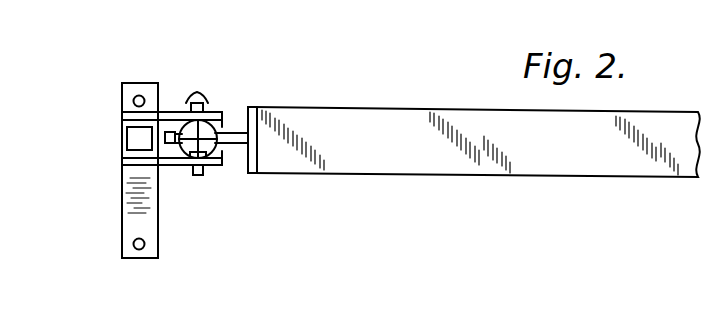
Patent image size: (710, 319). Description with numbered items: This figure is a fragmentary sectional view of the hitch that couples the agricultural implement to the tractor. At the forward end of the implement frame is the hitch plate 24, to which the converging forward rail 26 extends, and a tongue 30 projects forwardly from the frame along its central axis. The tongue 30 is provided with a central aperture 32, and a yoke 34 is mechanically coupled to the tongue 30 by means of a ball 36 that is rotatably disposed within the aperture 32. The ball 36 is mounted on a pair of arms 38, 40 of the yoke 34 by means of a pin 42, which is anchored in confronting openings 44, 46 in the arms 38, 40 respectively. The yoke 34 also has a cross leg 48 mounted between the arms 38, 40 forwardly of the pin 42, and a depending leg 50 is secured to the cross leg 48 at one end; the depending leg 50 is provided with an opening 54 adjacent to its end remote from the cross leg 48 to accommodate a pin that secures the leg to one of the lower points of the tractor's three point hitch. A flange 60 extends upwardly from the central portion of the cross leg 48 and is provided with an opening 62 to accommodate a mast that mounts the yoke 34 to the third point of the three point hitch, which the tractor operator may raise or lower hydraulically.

The hitch plate 24 is at (250, 107).
The forward rail 26 is at (492, 176).
The tongue 30 is at (233, 131).
The central aperture 32 is at (180, 166).
The yoke 34 is at (116, 125).
The ball 36 is at (197, 178).
The arm 38 is at (174, 112).
The arm 40 is at (157, 164).
The pin 42 is at (187, 100).
The opening 44 is at (210, 107).
The opening 46 is at (214, 166).
The cross leg 48 is at (121, 147).
The depending leg 50 is at (130, 213).
The opening 54 is at (126, 250).
The flange 60 is at (127, 83).
The opening 62 is at (133, 99).